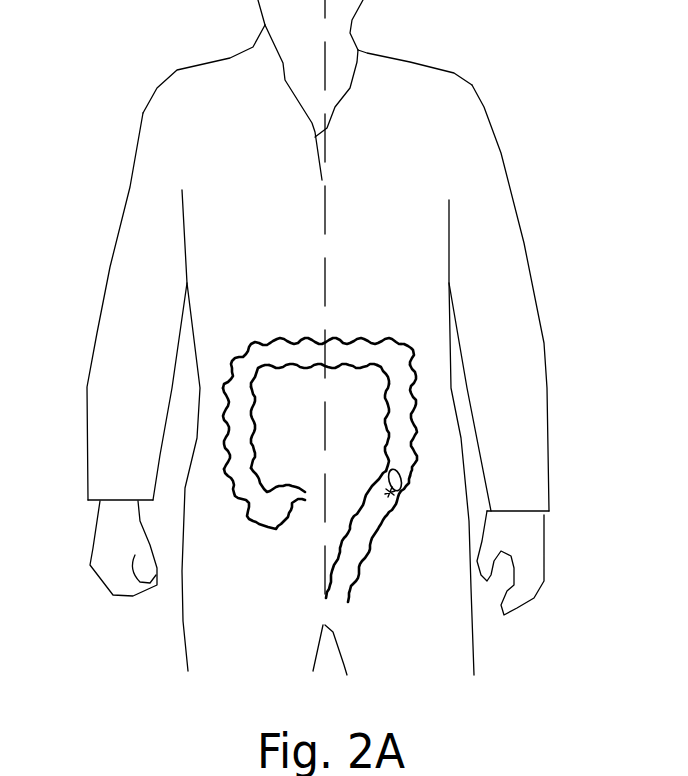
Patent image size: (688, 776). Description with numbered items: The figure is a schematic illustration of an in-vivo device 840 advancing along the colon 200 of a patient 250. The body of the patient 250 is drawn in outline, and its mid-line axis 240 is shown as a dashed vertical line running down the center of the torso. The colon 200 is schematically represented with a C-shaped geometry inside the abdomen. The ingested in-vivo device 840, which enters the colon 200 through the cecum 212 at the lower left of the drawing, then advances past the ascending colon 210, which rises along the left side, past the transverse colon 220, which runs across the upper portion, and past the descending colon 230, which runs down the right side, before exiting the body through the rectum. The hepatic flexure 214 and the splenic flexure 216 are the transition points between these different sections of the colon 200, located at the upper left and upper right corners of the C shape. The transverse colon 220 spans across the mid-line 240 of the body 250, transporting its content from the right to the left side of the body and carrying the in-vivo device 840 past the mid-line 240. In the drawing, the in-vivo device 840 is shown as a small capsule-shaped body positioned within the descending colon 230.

The colon 200 is at (317, 422).
The ascending colon 210 is at (228, 435).
The cecum 212 is at (273, 529).
The hepatic flexure 214 is at (233, 370).
The splenic flexure 216 is at (407, 343).
The transverse colon 220 is at (293, 340).
The descending colon 230 is at (420, 430).
The mid-line axis 240 is at (323, 207).
The patient 250 is at (115, 258).
The in-vivo device 840 is at (400, 494).